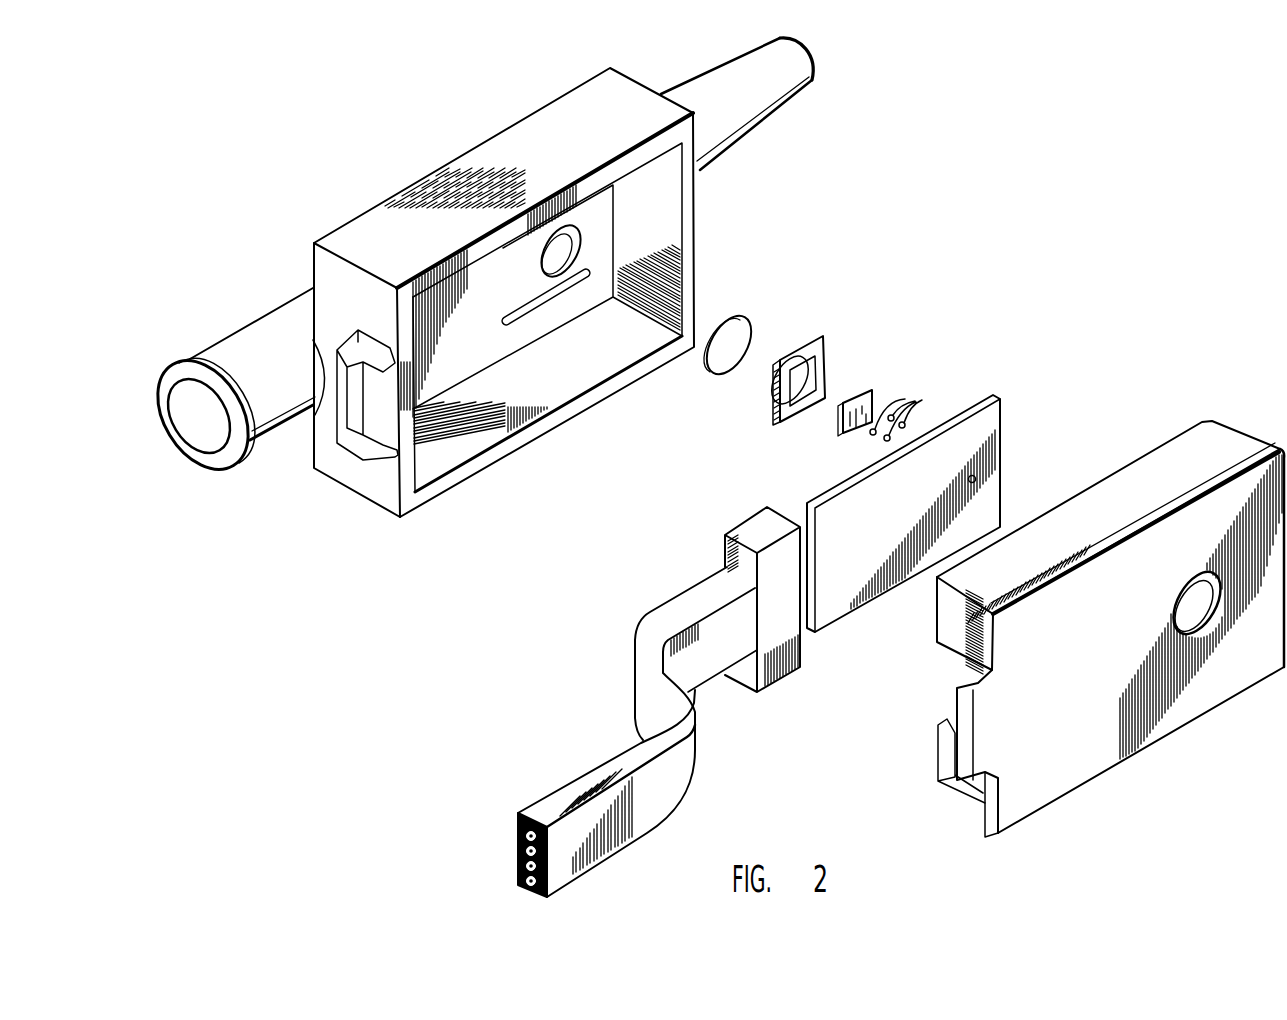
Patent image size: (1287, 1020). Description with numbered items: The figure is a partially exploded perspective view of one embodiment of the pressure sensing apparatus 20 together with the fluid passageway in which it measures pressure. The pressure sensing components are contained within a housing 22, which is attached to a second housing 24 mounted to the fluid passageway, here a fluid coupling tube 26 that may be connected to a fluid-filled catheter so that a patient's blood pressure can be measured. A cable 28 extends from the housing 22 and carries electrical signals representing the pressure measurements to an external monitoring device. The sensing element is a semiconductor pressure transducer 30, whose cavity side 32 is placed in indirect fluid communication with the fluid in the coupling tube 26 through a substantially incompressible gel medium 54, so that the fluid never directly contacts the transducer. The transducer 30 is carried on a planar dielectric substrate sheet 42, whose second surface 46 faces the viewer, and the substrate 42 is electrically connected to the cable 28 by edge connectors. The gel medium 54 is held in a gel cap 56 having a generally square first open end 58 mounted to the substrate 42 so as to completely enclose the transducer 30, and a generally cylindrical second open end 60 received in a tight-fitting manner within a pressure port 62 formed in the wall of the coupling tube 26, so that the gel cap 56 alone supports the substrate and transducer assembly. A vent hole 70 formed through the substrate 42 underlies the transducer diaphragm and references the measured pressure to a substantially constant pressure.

The pressure sensing apparatus 20 is at (963, 176).
The housing 22 is at (1225, 418).
The second housing 24 is at (737, 237).
The fluid coupling tube 26 is at (265, 328).
The cable 28 is at (590, 775).
The semiconductor pressure transducer 30 is at (882, 386).
The cavity side 32 is at (906, 400).
The dielectric substrate sheet 42 is at (1018, 380).
The second surface 46 is at (995, 432).
The gel medium 54 is at (746, 320).
The gel cap 56 is at (813, 328).
The first open end 58 is at (818, 377).
The second open end 60 is at (766, 377).
The pressure port 62 is at (570, 246).
The vent hole 70 is at (976, 478).